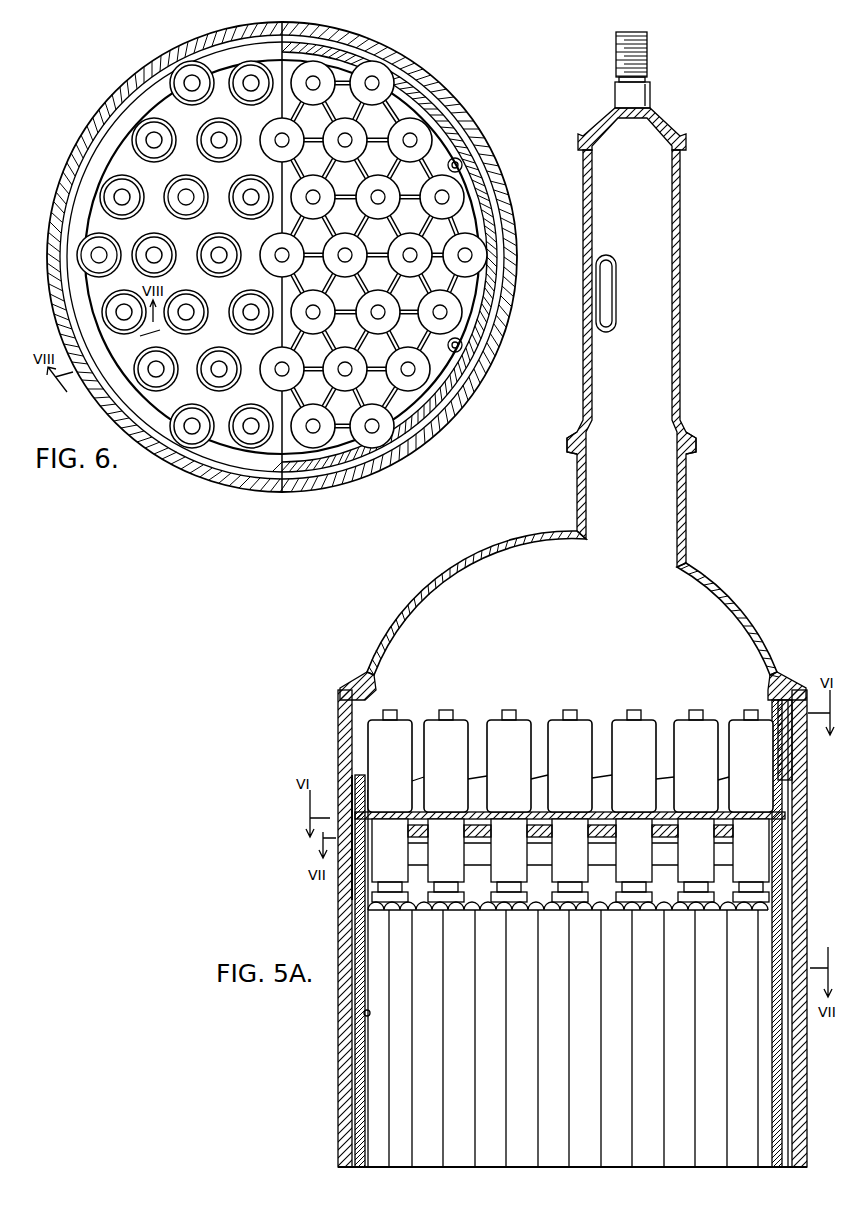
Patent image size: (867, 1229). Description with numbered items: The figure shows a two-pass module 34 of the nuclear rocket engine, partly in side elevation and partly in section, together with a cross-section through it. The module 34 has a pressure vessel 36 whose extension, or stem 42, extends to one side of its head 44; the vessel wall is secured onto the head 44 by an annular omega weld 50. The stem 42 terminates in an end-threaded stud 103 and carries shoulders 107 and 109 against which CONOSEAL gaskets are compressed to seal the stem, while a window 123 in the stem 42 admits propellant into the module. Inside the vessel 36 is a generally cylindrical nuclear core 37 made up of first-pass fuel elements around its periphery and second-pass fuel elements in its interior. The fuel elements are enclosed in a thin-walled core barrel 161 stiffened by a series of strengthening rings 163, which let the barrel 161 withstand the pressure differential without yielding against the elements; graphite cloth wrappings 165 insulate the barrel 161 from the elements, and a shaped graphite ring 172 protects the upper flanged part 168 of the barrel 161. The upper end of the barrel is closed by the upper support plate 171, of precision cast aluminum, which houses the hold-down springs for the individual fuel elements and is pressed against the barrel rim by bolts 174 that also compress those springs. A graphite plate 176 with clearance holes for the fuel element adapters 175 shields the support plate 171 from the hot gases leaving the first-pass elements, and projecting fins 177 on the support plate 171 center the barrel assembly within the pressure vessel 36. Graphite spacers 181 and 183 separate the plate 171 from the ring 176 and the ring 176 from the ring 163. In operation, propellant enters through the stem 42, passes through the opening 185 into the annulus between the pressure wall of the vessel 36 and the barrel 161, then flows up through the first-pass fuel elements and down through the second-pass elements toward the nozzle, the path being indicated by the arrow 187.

In FIG. 6, the module 34 is at (528, 368).
In FIG. 6, the pressure vessel 36 is at (463, 383).
In FIG. 6, the nuclear core 37 is at (352, 360).
In FIG. 5A, the nuclear core 37 is at (791, 952).
In FIG. 5A, the extension (stem) 42 is at (728, 294).
In FIG. 5A, the head 44 is at (716, 603).
In FIG. 5A, the annular omega weld 50 is at (782, 684).
In FIG. 5A, the end-threaded stud 103 is at (643, 50).
In FIG. 5A, the shoulder 107 is at (673, 140).
In FIG. 5A, the shoulder 109 is at (690, 447).
In FIG. 5A, the window 123 is at (602, 292).
In FIG. 5A, the core barrel 161 is at (352, 1040).
In FIG. 6, the strengthening rings 163 is at (112, 401).
In FIG. 5A, the strengthening rings 163 is at (362, 853).
In FIG. 5A, the graphite cloth wrappings 165 is at (362, 1014).
In FIG. 5A, the upper flanged part 168 is at (350, 887).
In FIG. 6, the upper support plate 171 is at (476, 220).
In FIG. 5A, the upper support plate 171 is at (492, 812).
In FIG. 5A, the shaped graphite ring 172 is at (363, 884).
In FIG. 6, the bolts 174 is at (480, 332).
In FIG. 6, the upper adapter 175 is at (180, 206).
In FIG. 5A, the upper adapter 175 is at (397, 830).
In FIG. 6, the graphite plate 176 is at (100, 279).
In FIG. 5A, the graphite plate 176 is at (466, 828).
In FIG. 6, the projecting fins 177 is at (482, 300).
In FIG. 5A, the projecting fins 177 is at (598, 790).
In FIG. 5A, the spacer 181 is at (788, 819).
In FIG. 5A, the spacer 183 is at (790, 845).
In FIG. 5A, the opening 185 is at (795, 770).
In FIG. 5A, the arrow 187 is at (783, 792).